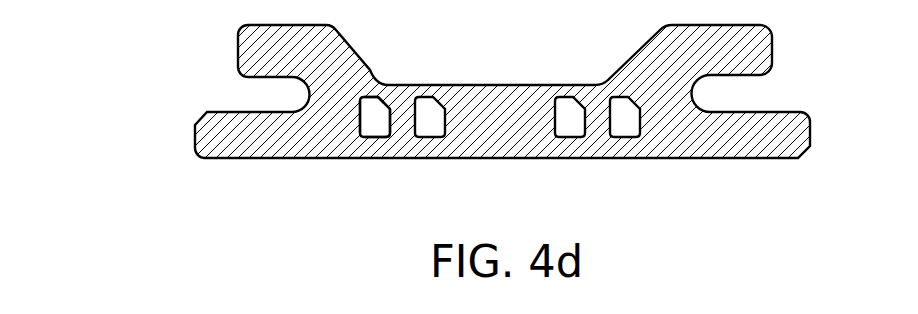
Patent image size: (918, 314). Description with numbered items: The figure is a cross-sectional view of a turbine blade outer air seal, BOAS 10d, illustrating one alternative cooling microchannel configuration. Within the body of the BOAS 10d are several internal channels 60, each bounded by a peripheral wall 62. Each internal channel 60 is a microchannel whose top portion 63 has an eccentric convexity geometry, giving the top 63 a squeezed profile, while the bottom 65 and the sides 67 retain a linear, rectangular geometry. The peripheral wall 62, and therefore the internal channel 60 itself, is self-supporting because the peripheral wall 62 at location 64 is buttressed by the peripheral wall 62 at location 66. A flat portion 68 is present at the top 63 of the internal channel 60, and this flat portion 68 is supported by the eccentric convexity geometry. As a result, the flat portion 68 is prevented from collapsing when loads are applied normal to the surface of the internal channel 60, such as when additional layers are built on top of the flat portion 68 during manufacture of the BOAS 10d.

The BOAS 10d is at (186, 135).
The internal channel 60 is at (356, 131).
The peripheral wall 62 is at (385, 135).
The top portion 63 is at (389, 104).
The location 64 is at (361, 102).
The bottom 65 is at (373, 138).
The location 66 is at (358, 103).
The sides 67 is at (392, 124).
The flat portion 68 is at (382, 94).